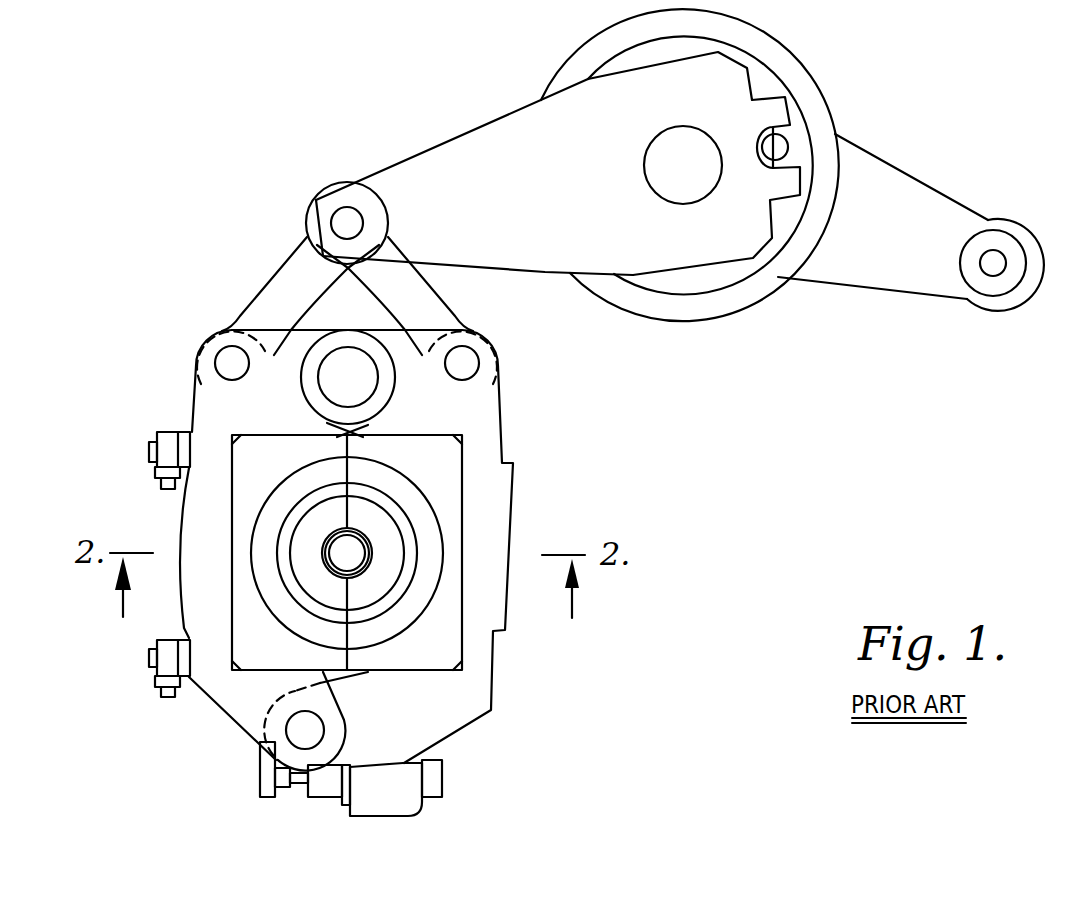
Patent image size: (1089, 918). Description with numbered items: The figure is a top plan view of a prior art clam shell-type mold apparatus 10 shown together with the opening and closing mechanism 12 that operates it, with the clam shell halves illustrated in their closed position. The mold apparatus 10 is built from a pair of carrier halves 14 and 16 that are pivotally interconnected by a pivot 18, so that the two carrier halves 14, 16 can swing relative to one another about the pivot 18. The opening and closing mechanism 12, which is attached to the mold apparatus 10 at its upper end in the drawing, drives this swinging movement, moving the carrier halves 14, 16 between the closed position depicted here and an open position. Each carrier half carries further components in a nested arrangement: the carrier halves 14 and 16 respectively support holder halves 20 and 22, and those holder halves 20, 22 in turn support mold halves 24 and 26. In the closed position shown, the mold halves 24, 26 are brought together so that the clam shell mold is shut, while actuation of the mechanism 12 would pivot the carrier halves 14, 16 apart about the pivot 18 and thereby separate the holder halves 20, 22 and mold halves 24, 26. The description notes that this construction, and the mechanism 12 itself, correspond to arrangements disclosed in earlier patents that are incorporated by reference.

The mold apparatus 10 is at (340, 526).
The opening and closing mechanism 12 is at (458, 124).
The carrier half 14 is at (187, 513).
The carrier half 16 is at (492, 458).
The pivot 18 is at (353, 357).
The holder half 20 is at (257, 652).
The holder half 22 is at (457, 650).
The mold half 24 is at (303, 568).
The mold half 26 is at (390, 533).